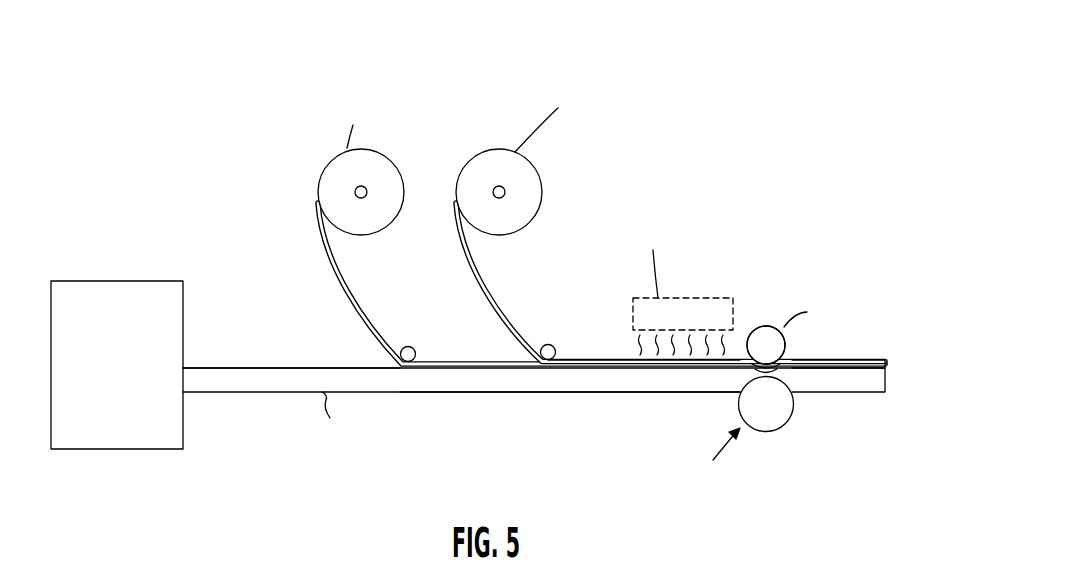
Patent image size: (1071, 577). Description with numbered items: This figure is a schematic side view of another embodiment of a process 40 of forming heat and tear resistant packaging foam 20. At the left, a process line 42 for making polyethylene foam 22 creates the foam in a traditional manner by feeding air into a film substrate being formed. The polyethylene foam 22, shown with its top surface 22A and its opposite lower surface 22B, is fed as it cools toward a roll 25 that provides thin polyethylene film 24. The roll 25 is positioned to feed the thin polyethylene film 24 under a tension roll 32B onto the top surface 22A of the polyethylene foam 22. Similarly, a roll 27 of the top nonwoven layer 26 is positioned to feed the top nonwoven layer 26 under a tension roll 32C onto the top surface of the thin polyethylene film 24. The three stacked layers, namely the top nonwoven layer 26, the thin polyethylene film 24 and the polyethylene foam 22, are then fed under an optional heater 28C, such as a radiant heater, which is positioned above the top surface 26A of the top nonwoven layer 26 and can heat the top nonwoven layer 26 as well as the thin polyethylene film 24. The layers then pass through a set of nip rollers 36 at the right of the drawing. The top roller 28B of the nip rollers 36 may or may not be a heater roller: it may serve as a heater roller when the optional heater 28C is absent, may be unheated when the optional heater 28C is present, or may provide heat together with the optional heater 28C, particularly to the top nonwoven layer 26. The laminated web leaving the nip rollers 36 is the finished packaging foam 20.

The process 40 is at (127, 200).
The process line 42 is at (183, 436).
The polyethylene foam 22 is at (226, 374).
The top surface of the polyethylene foam 22A is at (291, 368).
The second surface of polyethylene foam 22B is at (508, 392).
The thin polyethylene film 24 is at (362, 310).
The roll 25 is at (389, 165).
The top nonwoven layer 26 is at (500, 298).
The top surface of the top nonwoven layer 26A is at (481, 362).
The roll 27 is at (540, 190).
The guide roller 32B is at (413, 348).
The tension roll 32C is at (555, 347).
The optional heater 28C is at (712, 298).
The top roller 28B is at (764, 326).
The heat and tear resistant packaging foam 20 is at (803, 358).
The nip rollers 36 is at (780, 432).